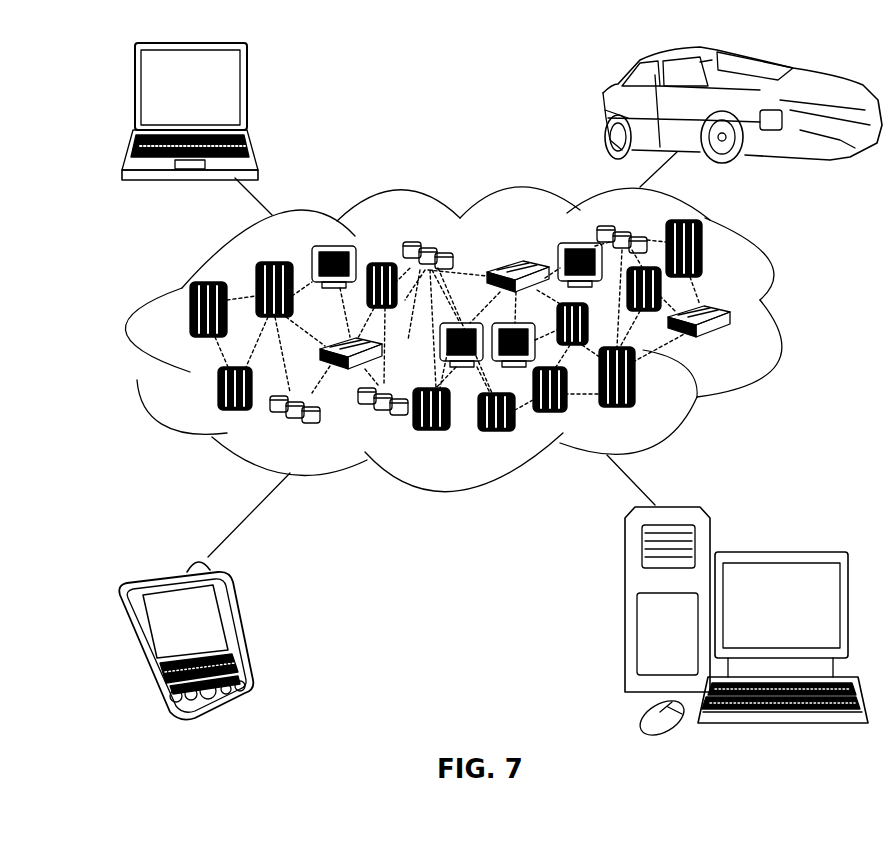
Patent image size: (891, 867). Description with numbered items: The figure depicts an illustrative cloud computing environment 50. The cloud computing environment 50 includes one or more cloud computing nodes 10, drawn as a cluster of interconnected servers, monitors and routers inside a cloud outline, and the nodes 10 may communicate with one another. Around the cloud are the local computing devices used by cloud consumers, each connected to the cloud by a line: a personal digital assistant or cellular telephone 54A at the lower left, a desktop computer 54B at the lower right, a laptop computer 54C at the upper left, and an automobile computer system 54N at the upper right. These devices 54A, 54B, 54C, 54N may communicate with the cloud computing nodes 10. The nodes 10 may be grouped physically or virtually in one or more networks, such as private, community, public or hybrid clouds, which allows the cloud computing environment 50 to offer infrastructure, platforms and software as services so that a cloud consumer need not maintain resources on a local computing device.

The cloud computing nodes 10 is at (735, 342).
The cloud computing environment 50 is at (782, 317).
The personal digital assistant (PDA) or cellular telephone 54A is at (238, 628).
The desktop computer 54B is at (780, 552).
The laptop computer 54C is at (247, 95).
The automobile computer system 54N is at (602, 108).